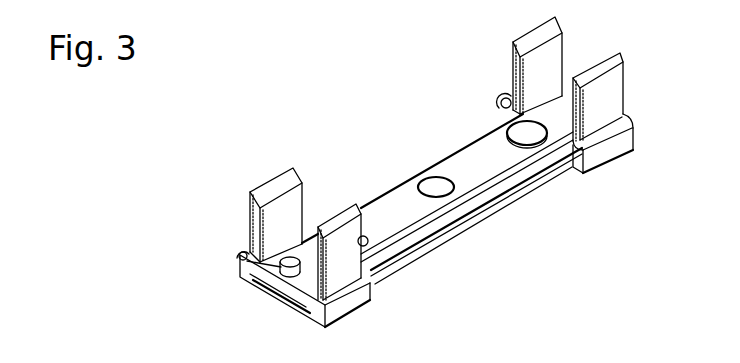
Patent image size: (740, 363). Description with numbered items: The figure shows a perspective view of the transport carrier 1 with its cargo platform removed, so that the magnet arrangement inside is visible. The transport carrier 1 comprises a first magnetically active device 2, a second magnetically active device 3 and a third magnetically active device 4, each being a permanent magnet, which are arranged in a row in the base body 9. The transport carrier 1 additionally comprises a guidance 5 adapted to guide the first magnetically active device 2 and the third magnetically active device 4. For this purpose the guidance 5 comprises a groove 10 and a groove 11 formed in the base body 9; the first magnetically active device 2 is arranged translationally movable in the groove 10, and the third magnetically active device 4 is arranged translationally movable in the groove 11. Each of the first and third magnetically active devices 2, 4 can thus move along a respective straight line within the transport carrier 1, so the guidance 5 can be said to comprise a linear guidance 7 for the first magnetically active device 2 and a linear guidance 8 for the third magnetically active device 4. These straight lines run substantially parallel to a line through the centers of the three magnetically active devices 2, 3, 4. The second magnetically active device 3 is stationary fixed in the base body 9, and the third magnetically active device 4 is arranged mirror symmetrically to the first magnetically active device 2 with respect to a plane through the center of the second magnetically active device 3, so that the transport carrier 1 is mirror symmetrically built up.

The transport carrier 1 is at (620, 148).
The first magnetically active device 2 is at (531, 138).
The second magnetically active device 3 is at (435, 192).
The third magnetically active device 4 is at (366, 250).
The guidance 5 is at (573, 100).
The linear guidance 7 is at (551, 113).
The linear guidance 8 is at (248, 260).
The base body 9 is at (484, 186).
The groove 10 is at (561, 108).
The groove 11 is at (292, 258).